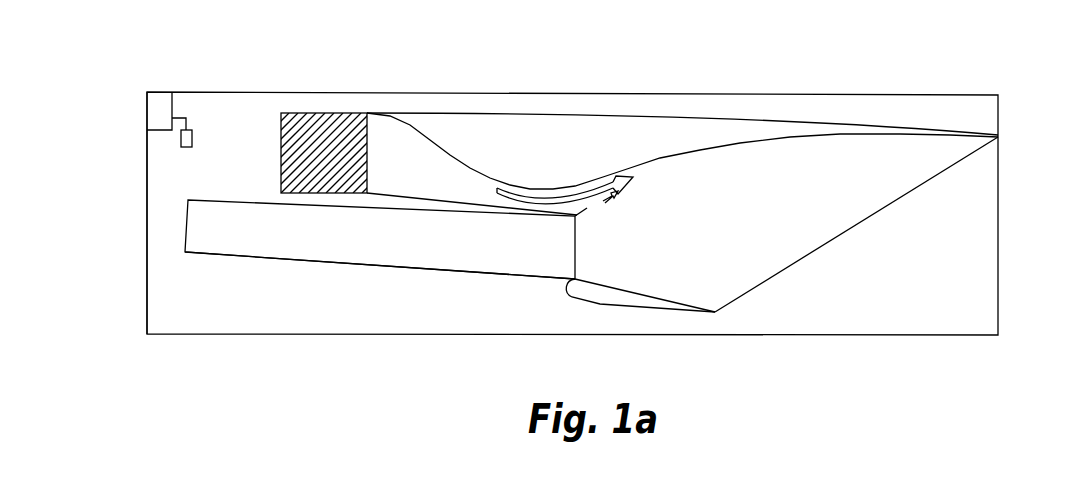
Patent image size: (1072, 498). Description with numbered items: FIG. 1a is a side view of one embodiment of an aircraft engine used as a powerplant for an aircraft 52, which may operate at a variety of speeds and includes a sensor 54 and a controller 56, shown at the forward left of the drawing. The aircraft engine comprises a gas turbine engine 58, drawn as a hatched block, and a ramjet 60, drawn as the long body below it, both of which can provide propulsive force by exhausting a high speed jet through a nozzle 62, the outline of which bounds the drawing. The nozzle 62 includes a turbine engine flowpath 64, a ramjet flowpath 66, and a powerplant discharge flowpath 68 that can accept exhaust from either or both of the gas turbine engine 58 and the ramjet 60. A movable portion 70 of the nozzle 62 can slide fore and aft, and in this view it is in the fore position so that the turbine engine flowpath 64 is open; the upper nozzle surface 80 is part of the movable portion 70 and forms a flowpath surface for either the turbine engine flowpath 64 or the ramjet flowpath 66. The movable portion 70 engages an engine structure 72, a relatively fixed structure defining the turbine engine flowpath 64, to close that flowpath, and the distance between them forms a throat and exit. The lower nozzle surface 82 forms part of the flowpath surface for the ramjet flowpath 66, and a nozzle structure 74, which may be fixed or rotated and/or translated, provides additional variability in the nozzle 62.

The aircraft 52 is at (190, 110).
The sensor 54 is at (157, 112).
The controller 56 is at (192, 138).
The gas turbine engine 58 is at (323, 137).
The ramjet 60 is at (388, 240).
The nozzle 62 is at (800, 62).
The turbine engine flowpath 64 is at (538, 195).
The ramjet flowpath 66 is at (493, 252).
The powerplant discharge flowpath 68 is at (793, 222).
The movable portion 70 is at (613, 137).
The engine structure 72 is at (614, 191).
The nozzle structure 74 is at (612, 296).
The upper nozzle surface 80 is at (818, 137).
The lower nozzle surface 82 is at (647, 295).